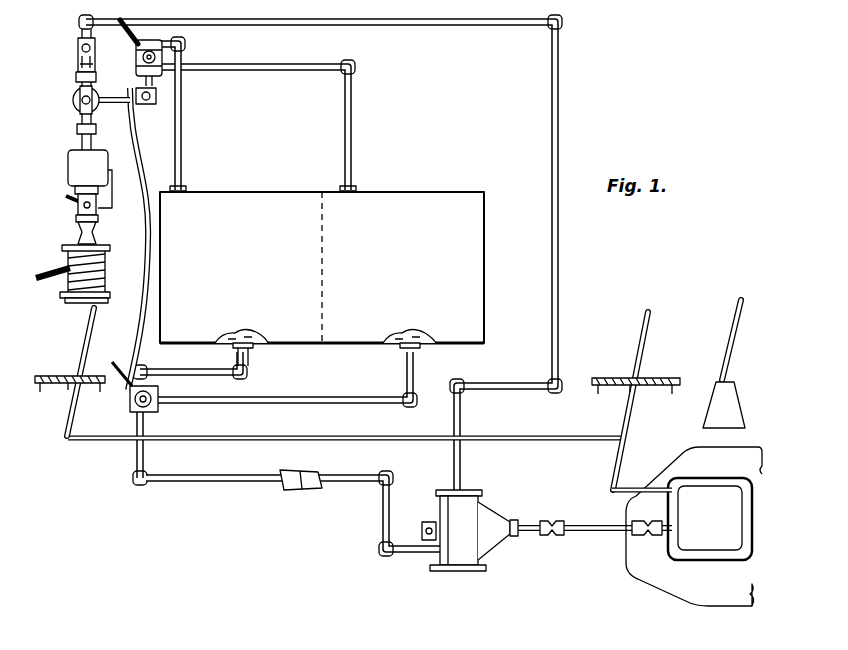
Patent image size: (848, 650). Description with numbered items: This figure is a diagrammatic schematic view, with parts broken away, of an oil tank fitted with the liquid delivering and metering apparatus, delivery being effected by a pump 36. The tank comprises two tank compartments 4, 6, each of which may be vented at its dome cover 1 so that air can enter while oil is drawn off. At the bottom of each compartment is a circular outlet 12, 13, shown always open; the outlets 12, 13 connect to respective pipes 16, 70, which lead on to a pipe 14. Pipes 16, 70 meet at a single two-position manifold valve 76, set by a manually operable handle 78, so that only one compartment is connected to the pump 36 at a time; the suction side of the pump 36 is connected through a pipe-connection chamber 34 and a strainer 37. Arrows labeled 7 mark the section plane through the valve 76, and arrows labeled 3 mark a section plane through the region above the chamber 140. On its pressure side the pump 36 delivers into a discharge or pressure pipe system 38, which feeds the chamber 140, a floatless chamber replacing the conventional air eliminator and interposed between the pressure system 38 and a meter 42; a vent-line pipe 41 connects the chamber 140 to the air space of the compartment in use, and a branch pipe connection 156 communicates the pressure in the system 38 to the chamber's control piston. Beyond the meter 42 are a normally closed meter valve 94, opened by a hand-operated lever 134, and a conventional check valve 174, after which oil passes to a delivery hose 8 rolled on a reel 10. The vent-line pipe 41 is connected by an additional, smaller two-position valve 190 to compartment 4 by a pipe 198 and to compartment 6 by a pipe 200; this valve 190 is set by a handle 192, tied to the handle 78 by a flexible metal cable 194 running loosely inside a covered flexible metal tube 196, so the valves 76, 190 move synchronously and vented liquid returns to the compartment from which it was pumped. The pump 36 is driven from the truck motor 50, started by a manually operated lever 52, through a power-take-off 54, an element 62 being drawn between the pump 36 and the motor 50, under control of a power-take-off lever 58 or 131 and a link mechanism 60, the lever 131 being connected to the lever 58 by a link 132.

The dome cover 1 is at (185, 192).
The section line 3- 3 is at (86, 2).
The tank compartment 4 is at (268, 205).
The tank compartment 6 is at (405, 205).
The section line 7- 7 is at (125, 420).
The delivery hose 8 is at (50, 285).
The reel 10 is at (102, 300).
The circular outlet 12 is at (250, 349).
The circular outlet 13 is at (420, 349).
The pipe 14 is at (135, 460).
The pipe 16 is at (205, 370).
The pipe-connection chamber 34 is at (238, 482).
The pump 36 is at (462, 572).
The strainer 37 is at (295, 490).
The pressure pipe system 38 is at (272, 30).
The vent-line pipe 41 is at (118, 113).
The meter 42 is at (66, 163).
The truck motor 50 is at (647, 565).
The manually operated lever 52 is at (732, 325).
The power-take-off 54 is at (707, 548).
The power-take-off lever 58 is at (642, 330).
The link mechanism 60 is at (625, 495).
The shaft 62 is at (600, 535).
The pipe 70 is at (343, 397).
The two-position manifold valve 76 is at (125, 403).
The handle 78 is at (112, 365).
The meter valve 94 is at (75, 207).
The power-take-off lever 131 is at (88, 330).
The link 132 is at (400, 438).
The hand-operated lever 134 is at (70, 200).
The chamber 140 is at (72, 98).
The branch pipe connection 156 is at (80, 60).
The check valve 174 is at (72, 236).
The additional two-position valve 190 is at (153, 96).
The handle 192 is at (125, 33).
The flexible metal cable 194 is at (136, 52).
The flexible metal tube 196 is at (146, 225).
The pipe 198 is at (184, 88).
The pipe 200 is at (315, 75).